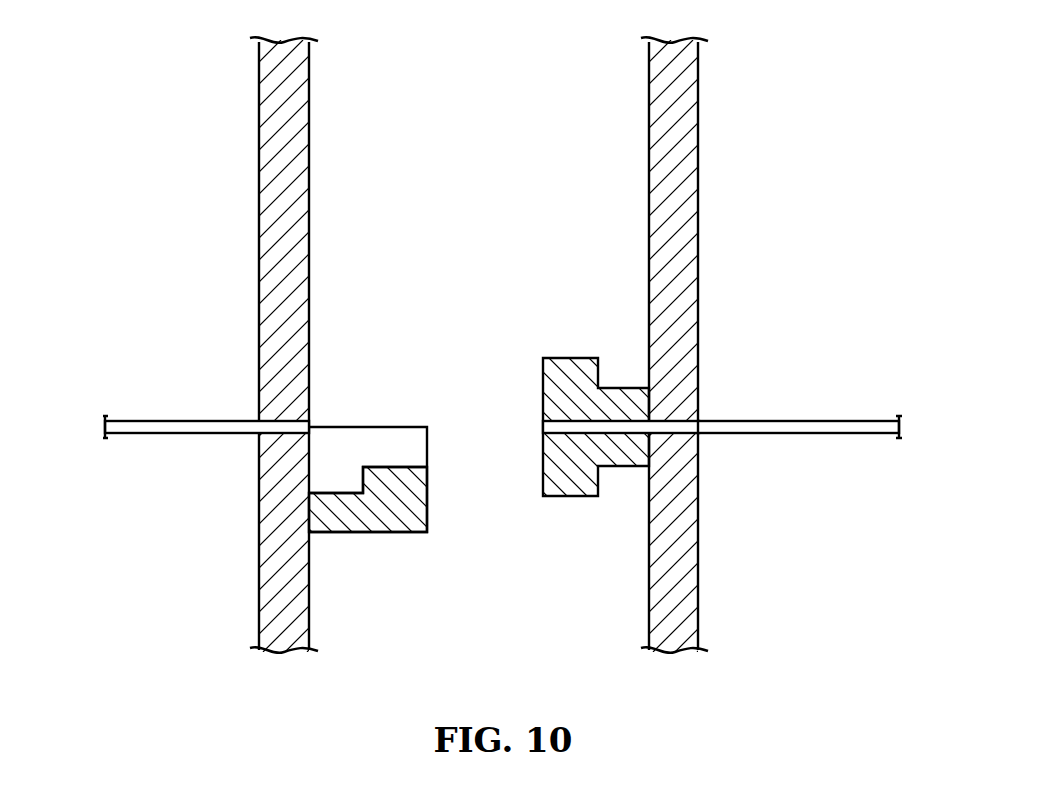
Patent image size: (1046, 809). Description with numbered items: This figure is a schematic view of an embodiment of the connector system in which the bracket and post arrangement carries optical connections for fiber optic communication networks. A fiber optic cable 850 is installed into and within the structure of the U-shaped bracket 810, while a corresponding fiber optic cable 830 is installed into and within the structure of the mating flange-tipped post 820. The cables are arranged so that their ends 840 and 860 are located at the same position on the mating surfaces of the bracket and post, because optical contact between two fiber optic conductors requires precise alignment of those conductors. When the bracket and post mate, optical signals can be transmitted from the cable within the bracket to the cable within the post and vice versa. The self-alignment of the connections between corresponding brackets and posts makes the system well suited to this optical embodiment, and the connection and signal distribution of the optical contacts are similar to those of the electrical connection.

The bracket 810 is at (394, 532).
The post 820 is at (571, 357).
The fiber optic cable 830 is at (851, 419).
The cable end 840 is at (543, 425).
The fiber optic cable 850 is at (151, 437).
The cable end 860 is at (353, 426).